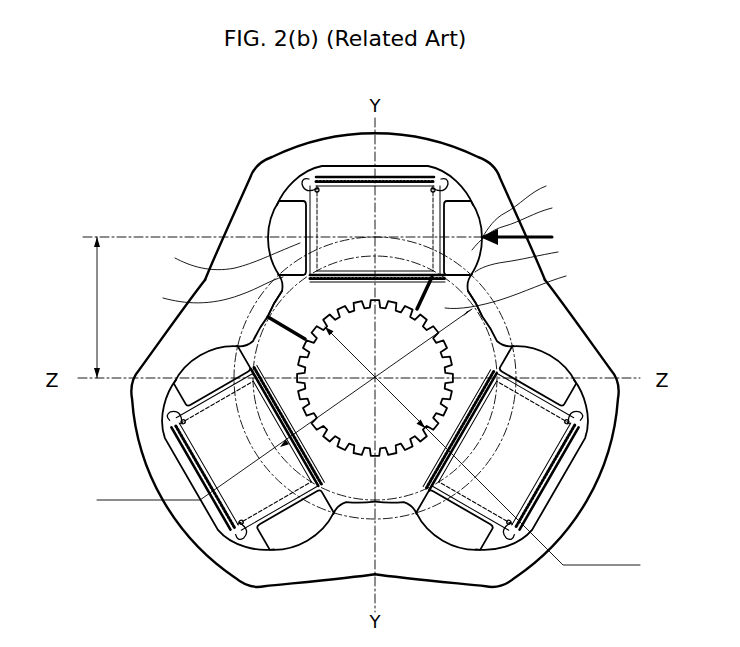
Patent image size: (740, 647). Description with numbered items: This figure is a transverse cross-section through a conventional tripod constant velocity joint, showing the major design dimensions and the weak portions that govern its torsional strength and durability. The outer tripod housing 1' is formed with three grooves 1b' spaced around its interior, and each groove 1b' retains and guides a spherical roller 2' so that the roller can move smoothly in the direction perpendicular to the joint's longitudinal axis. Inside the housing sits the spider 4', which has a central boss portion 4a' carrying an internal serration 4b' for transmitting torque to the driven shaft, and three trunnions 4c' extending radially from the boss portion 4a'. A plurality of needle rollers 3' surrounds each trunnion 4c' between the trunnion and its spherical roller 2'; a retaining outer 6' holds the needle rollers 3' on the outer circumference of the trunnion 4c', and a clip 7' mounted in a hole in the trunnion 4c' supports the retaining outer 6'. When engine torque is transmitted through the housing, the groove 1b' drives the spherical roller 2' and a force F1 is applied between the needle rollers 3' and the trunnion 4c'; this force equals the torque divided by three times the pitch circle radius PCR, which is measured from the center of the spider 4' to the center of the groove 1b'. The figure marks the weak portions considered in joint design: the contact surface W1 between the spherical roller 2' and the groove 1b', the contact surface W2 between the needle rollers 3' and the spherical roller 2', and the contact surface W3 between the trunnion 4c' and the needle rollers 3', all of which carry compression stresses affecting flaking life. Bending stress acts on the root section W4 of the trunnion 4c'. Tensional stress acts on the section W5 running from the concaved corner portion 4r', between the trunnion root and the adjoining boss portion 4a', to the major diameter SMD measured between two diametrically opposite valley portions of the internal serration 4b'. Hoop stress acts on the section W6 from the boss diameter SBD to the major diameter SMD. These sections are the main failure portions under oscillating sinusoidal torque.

The tripod housing 1' is at (375, 185).
The groove 1b' is at (397, 220).
The spherical roller 2' is at (412, 210).
The needle rollers 3' is at (406, 189).
The spider 4' is at (360, 283).
The boss portion 4a' is at (466, 257).
The internal serration 4b' is at (547, 321).
The trunnion 4c' is at (244, 258).
The concaved corner portion 4r' is at (315, 378).
The retaining outer 6' is at (263, 184).
The clip 7' is at (296, 158).
The contact surface W1 is at (524, 204).
The contact surface W2 is at (526, 225).
The contact surface W3 is at (528, 257).
The root section W4 is at (230, 256).
The section W5 is at (517, 288).
The section W6 is at (211, 290).
The force F1 is at (516, 228).
The pitch circle radius PCR is at (84, 307).
The boss diameter SBD is at (263, 404).
The major diameter SMD is at (482, 446).